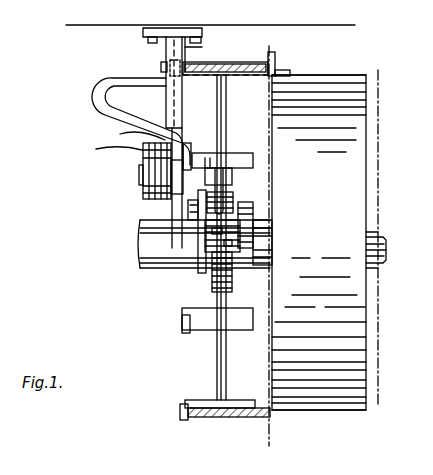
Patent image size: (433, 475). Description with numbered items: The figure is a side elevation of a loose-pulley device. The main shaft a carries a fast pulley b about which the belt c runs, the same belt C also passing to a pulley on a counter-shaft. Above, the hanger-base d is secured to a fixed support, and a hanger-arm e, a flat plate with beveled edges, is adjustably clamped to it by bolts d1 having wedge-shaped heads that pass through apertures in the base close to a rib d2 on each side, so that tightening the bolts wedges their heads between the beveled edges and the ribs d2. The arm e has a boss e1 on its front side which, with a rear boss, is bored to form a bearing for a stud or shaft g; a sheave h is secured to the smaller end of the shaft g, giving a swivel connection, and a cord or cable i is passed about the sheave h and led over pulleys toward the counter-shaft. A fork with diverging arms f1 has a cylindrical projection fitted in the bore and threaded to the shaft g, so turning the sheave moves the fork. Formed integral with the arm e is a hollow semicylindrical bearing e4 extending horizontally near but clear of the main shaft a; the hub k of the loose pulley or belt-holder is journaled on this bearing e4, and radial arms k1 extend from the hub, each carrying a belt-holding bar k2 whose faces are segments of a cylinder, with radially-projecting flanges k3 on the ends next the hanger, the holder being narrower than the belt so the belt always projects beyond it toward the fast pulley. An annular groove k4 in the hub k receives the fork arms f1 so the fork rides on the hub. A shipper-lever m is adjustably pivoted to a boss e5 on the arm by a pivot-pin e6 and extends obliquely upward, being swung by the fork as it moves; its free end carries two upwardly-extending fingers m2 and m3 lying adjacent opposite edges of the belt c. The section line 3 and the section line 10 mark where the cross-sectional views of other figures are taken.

The hanger-base d is at (178, 32).
The bolts d1 is at (153, 83).
The rib d2 is at (209, 43).
The finger m2 is at (168, 62).
The belt c is at (235, 68).
The finger m3 is at (276, 62).
The section line 3 is at (268, 248).
The fast pulley b is at (358, 157).
The section line 10 is at (379, 243).
The main shaft a is at (383, 240).
The shipper-lever m is at (99, 100).
The cord or cable i is at (135, 133).
The sheave h is at (110, 149).
The stud or shaft g is at (139, 168).
The boss e1 is at (170, 182).
The hanger-arm e is at (172, 210).
The diverging arms f1 is at (228, 186).
The radial arms k1 is at (216, 358).
The hollow semicylindrical bearing e4 is at (255, 226).
The boss e5 is at (196, 250).
The pivot-pin e6 is at (165, 252).
The hub k is at (233, 290).
The annular groove k4 is at (202, 290).
The belt-holding bar k2 is at (182, 402).
The radially-projecting flanges k3 is at (186, 413).
The belt C is at (222, 420).